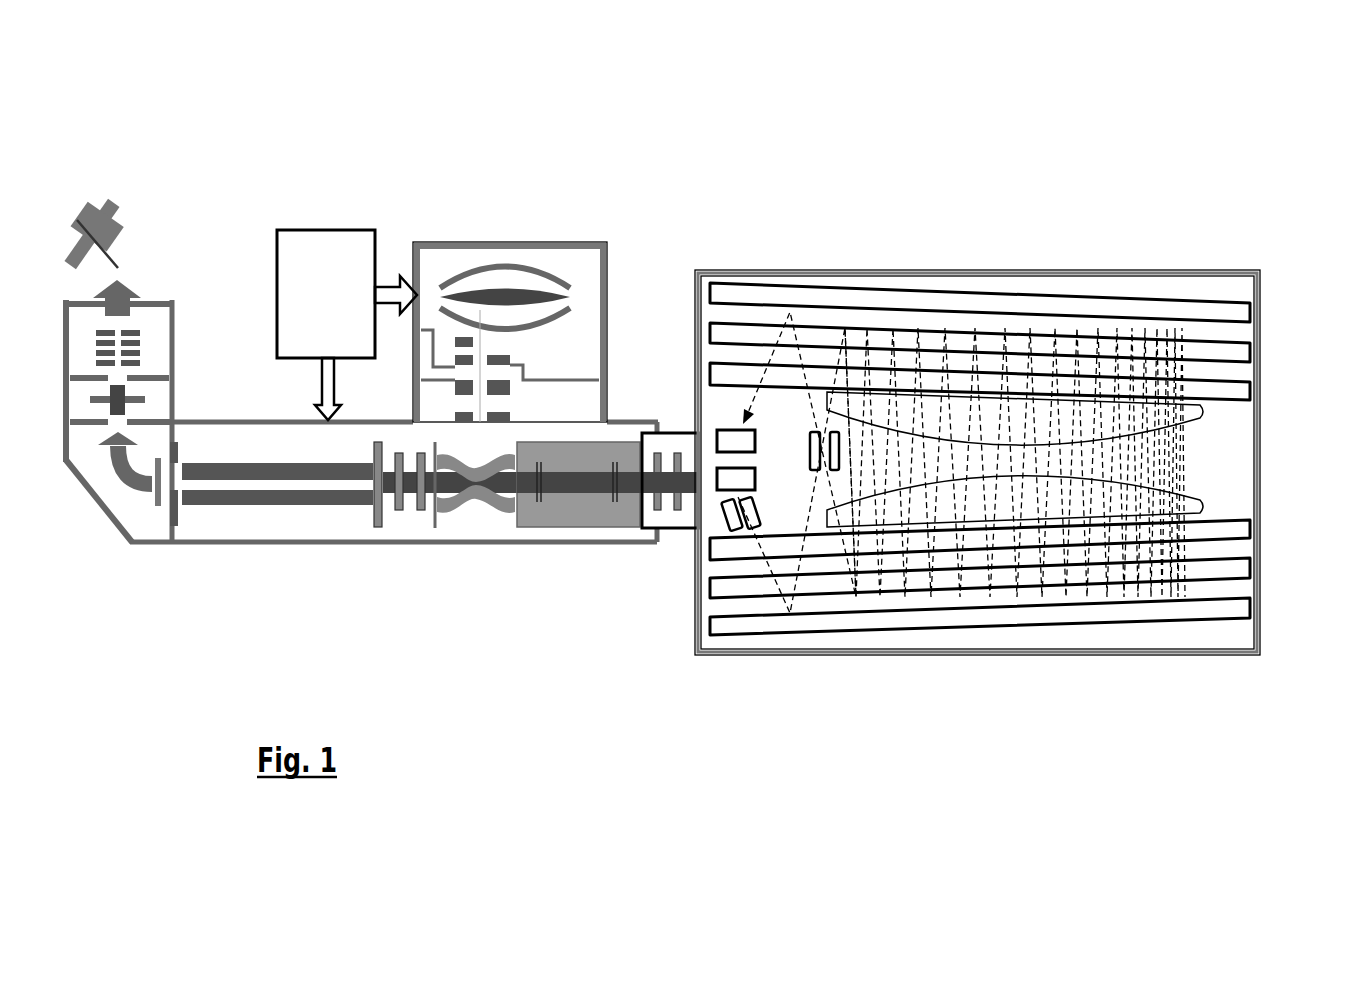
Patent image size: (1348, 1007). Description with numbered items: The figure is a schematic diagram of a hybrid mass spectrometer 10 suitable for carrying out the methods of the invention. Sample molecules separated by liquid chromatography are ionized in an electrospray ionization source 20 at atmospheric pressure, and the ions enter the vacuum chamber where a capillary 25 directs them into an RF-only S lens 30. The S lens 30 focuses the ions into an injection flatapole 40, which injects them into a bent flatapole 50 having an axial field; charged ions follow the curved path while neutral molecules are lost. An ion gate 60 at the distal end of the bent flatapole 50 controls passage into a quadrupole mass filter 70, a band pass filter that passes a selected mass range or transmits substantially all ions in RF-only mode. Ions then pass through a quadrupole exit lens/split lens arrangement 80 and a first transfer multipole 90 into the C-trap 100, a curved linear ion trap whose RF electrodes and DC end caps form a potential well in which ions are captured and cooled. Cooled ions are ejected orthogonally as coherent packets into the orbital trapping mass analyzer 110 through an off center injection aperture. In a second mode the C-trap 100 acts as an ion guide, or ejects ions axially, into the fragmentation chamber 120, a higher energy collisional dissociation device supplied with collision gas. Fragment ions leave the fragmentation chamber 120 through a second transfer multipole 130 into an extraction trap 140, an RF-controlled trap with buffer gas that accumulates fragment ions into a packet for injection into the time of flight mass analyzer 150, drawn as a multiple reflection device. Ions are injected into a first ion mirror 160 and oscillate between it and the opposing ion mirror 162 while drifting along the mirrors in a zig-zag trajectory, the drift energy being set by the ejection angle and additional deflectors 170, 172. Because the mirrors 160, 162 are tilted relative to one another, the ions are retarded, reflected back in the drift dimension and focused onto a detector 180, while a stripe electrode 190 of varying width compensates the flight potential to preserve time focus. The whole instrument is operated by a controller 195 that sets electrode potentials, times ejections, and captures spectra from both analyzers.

The mass spectrometer 10 is at (695, 417).
The electrospray ionization source 20 is at (105, 208).
The capillary 25 is at (122, 318).
The S lens 30 is at (140, 338).
The injection flatapole 40 is at (140, 400).
The bent flatapole 50 is at (137, 455).
The ion gate 60 is at (172, 513).
The quadrupole mass filter 70 is at (263, 505).
The quadrupole exit lens/split lens arrangement 80 is at (377, 515).
The first transfer multipole 90 is at (398, 510).
The C-trap 100 is at (478, 517).
The orbital trapping mass analyzer 110 is at (473, 268).
The fragmentation chamber 120 is at (610, 440).
The second transfer multipole 130 is at (677, 512).
The extraction trap 140 is at (717, 475).
The time of flight mass analyzer 150 is at (987, 445).
The first ion mirror 160 is at (917, 630).
The second ion mirror 162 is at (1093, 297).
The deflector 170 is at (757, 522).
The deflector 172 is at (810, 442).
The detector 180 is at (727, 432).
The stripe electrode 190 is at (1203, 416).
The controller 195 is at (347, 325).